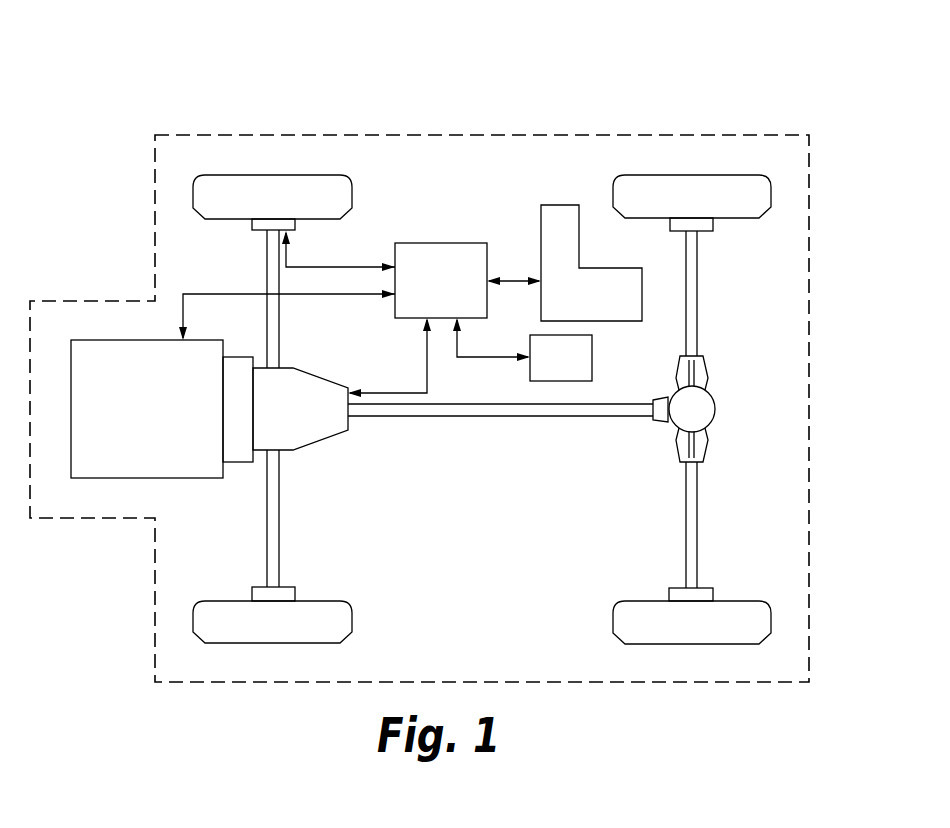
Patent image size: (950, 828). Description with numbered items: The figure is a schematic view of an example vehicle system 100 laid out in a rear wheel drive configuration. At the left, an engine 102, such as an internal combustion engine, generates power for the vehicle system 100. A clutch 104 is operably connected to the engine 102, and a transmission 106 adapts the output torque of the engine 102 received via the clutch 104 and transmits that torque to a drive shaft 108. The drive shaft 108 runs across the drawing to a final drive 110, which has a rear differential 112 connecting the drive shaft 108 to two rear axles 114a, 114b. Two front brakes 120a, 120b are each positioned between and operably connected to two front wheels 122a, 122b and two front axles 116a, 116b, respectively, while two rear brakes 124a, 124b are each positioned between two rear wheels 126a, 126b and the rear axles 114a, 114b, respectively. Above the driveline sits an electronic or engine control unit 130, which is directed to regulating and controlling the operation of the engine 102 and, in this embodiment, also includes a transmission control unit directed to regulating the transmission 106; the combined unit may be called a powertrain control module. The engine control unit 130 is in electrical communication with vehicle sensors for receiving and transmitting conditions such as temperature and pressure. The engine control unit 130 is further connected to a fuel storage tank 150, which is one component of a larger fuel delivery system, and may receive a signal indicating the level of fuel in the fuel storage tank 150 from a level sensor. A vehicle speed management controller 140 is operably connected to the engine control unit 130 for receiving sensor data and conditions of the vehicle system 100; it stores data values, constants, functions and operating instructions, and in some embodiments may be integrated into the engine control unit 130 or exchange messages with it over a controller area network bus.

The vehicle system 100 is at (838, 98).
The engine 102 is at (130, 422).
The clutch 104 is at (236, 462).
The transmission 106 is at (275, 422).
The drive shaft 108 is at (456, 418).
The final drive 110 is at (742, 349).
The rear differential 112 is at (715, 410).
The rear axle 114a is at (686, 525).
The rear axle 114b is at (697, 303).
The front axle 116a is at (279, 530).
The front axle 116b is at (279, 329).
The front brake 120a is at (295, 594).
The front brake 120b is at (252, 226).
The front wheel 122a is at (297, 635).
The front wheel 122b is at (297, 209).
The rear brake 124a is at (669, 593).
The rear brake 124b is at (713, 226).
The rear wheel 126a is at (671, 635).
The rear wheel 126b is at (671, 209).
The engine control unit 130 is at (459, 294).
The vehicle speed management controller 140 is at (579, 371).
The fuel storage tank 150 is at (610, 308).